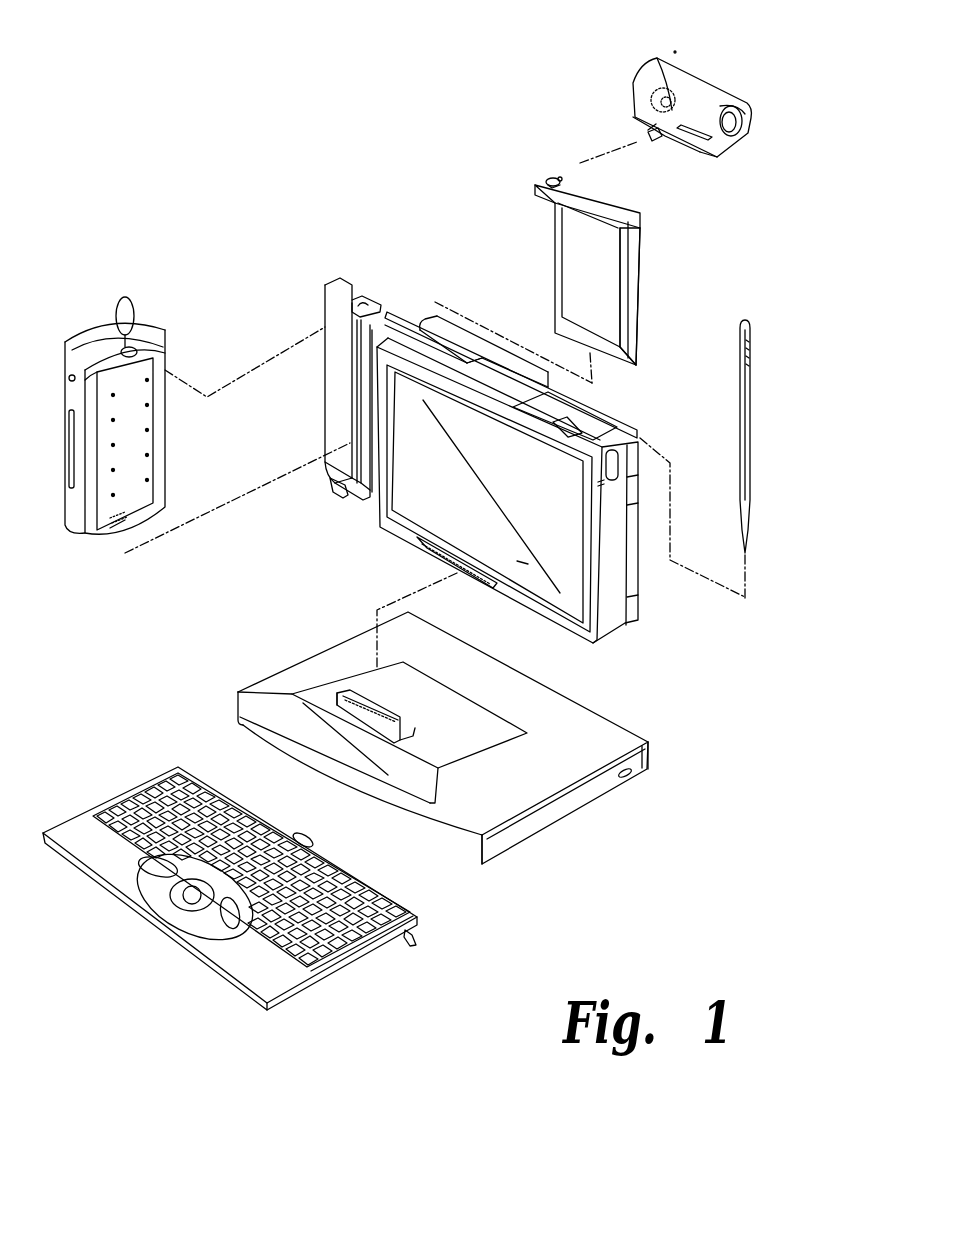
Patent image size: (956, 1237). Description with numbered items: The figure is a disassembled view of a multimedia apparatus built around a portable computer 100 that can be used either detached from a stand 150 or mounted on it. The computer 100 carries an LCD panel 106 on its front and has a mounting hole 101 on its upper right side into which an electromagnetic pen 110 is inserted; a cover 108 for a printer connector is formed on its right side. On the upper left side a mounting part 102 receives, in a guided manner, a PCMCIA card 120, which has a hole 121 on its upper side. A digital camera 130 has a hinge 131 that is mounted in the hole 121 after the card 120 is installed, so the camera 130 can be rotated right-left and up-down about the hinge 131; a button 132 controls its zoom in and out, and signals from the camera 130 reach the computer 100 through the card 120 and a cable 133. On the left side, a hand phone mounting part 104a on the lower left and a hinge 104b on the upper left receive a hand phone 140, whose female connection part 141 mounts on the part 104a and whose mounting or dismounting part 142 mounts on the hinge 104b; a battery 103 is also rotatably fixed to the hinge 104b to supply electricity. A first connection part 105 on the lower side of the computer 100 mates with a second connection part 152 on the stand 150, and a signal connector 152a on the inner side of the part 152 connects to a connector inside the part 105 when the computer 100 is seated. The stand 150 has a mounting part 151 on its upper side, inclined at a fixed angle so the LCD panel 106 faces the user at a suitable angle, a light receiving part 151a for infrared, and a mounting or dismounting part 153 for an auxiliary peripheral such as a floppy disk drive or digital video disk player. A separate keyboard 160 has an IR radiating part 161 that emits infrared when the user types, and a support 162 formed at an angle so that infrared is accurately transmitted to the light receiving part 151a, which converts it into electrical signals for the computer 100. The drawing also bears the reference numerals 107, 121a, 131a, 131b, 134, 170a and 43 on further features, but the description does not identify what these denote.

The portable computer 100 is at (495, 423).
The mounting hole 101 is at (636, 447).
The mounting part 102 is at (457, 350).
The battery 103 is at (345, 395).
The hand phone mounting part 104a is at (332, 494).
The hinge 104b is at (352, 310).
The first connection part 105 is at (478, 581).
The LCD panel 106 is at (522, 562).
The top rim 107 is at (620, 423).
The cover 108 is at (640, 577).
The electromagnetic pen 110 is at (750, 333).
The PCMCIA card 120 is at (602, 245).
The hole 121 is at (548, 182).
The hinge pin end 121a is at (567, 179).
The digital camera 130 is at (697, 105).
The hinge 131 is at (655, 87).
The camera mounting arrow 131a is at (637, 117).
The camera top 131b is at (690, 32).
The button 132 is at (703, 156).
The cable 133 is at (650, 141).
The lens 134 is at (749, 127).
The hand phone 140 is at (126, 438).
The female connection part 141 is at (113, 537).
The mounting or dismounting part 142 is at (160, 328).
The stand 150 is at (426, 762).
The mounting part 151 is at (352, 729).
The light receiving part 151a is at (322, 728).
The second connection part 152 is at (336, 676).
The signal connector 152a is at (357, 692).
The mounting or dismounting part 153 is at (487, 866).
The keyboard 160 is at (271, 878).
The IR radiating part 161 is at (298, 837).
The support 162 is at (416, 938).
The base side wall 170a is at (590, 810).
The frame side bar 43 is at (638, 275).